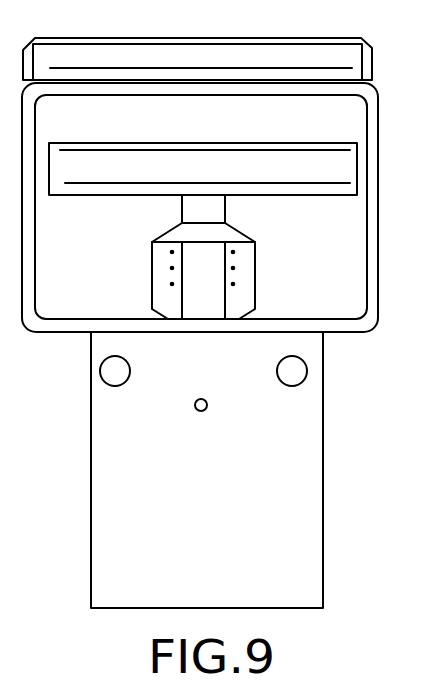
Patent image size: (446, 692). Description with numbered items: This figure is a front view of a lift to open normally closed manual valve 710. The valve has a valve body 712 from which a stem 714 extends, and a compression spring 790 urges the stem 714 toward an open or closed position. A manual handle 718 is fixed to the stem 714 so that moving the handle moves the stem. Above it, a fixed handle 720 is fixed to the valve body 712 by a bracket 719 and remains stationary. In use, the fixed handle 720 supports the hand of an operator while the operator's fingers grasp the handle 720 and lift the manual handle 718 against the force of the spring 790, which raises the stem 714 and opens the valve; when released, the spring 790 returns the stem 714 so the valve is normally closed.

The manual valve 710 is at (88, 428).
The valve body 712 is at (323, 462).
The stem 714 is at (225, 210).
The manual handle 718 is at (168, 143).
The bracket 719 is at (379, 211).
The fixed handle 720 is at (160, 37).
The compression spring 790 is at (233, 285).